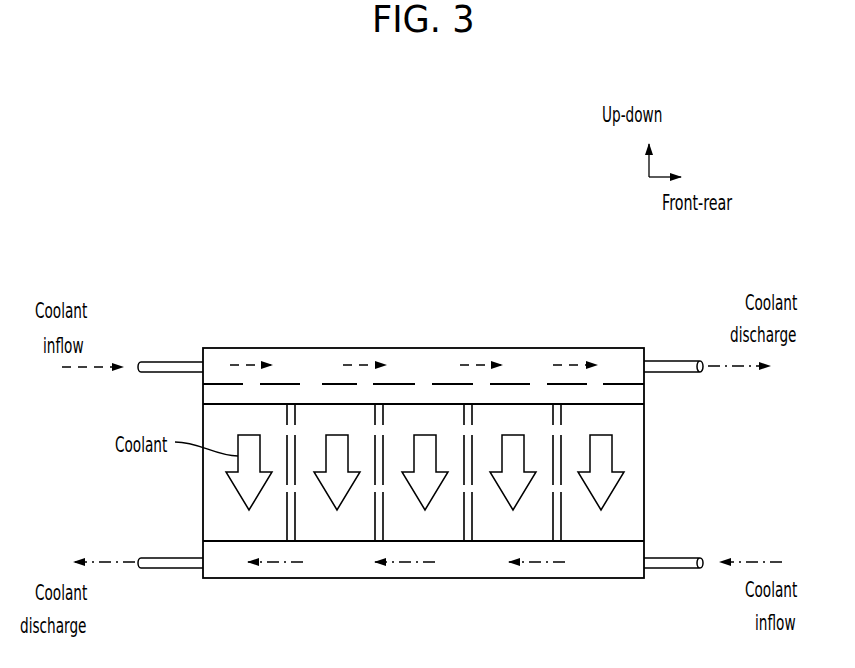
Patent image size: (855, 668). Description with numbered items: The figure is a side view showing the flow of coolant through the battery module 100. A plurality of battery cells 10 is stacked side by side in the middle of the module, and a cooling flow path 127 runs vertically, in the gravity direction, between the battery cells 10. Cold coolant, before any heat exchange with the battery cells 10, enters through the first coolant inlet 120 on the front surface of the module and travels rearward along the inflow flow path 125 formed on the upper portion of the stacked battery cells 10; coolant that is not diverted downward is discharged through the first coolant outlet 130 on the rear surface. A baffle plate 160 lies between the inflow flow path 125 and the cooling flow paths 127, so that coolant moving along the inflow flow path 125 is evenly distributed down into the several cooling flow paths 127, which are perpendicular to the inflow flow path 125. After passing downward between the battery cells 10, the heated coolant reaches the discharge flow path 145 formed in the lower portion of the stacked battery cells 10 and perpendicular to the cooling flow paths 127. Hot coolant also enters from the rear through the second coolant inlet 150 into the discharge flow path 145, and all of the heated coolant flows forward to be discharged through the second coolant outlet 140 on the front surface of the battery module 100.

The battery module 100 is at (434, 282).
The battery cell 10 is at (632, 455).
The first coolant inlet 120 is at (167, 363).
The inflow flow path 125 is at (542, 364).
The cooling flow path 127 is at (463, 533).
The first coolant outlet 130 is at (657, 364).
The second coolant outlet 140 is at (167, 564).
The discharge flow path 145 is at (610, 563).
The second coolant inlet 150 is at (682, 563).
The baffle plate 160 is at (317, 383).